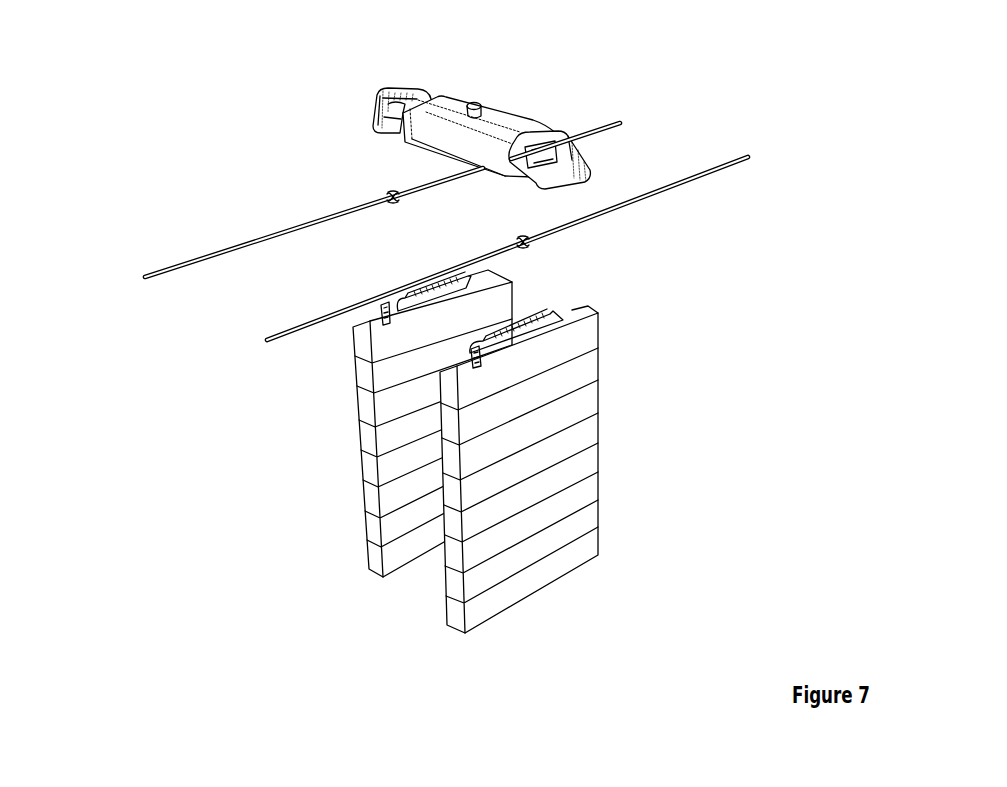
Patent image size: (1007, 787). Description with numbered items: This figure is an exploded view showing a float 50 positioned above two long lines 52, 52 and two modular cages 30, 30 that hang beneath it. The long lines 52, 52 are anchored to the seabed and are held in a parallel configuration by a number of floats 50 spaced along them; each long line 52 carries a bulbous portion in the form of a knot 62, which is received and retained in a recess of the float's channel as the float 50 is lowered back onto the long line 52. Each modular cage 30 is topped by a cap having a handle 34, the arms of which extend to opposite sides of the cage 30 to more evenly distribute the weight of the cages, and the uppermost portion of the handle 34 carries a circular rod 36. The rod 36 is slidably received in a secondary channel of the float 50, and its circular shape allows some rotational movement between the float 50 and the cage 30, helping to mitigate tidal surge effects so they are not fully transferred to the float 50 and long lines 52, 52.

The modular cage 30 is at (455, 596).
The handle 34 is at (487, 360).
The circular rod 36 is at (453, 283).
The float 50 is at (533, 77).
The long line 52 is at (178, 257).
The knot 62 is at (388, 207).